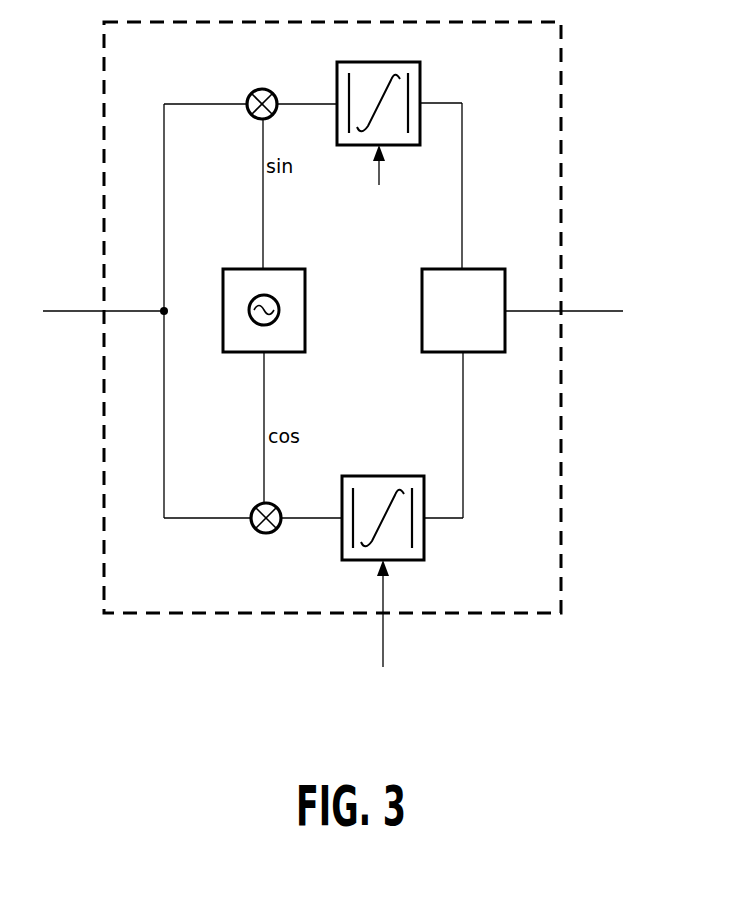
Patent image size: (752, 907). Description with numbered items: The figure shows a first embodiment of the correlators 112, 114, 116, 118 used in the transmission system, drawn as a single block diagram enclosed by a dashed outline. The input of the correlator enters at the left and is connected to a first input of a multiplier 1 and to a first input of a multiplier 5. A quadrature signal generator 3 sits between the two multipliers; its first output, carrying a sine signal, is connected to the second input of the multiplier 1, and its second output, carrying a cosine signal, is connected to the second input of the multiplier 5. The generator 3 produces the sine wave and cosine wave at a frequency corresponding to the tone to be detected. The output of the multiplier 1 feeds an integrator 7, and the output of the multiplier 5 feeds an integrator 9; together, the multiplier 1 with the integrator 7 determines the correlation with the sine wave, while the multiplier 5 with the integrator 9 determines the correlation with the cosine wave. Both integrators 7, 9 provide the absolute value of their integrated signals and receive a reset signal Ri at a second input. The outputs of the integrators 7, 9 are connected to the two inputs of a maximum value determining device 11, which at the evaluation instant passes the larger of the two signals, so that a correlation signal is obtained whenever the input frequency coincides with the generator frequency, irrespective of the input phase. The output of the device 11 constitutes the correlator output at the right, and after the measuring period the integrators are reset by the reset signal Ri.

The multiplier 1 is at (272, 89).
The quadrature signal generator 3 is at (305, 341).
The multiplier 5 is at (276, 533).
The integrator 7 is at (420, 86).
The integrator 9 is at (424, 543).
The maximum value determining device 11 is at (422, 297).
The correlator 112 is at (332, 354).
The correlator 114 is at (332, 354).
The correlator 116 is at (332, 354).
The correlator 118 is at (178, 615).